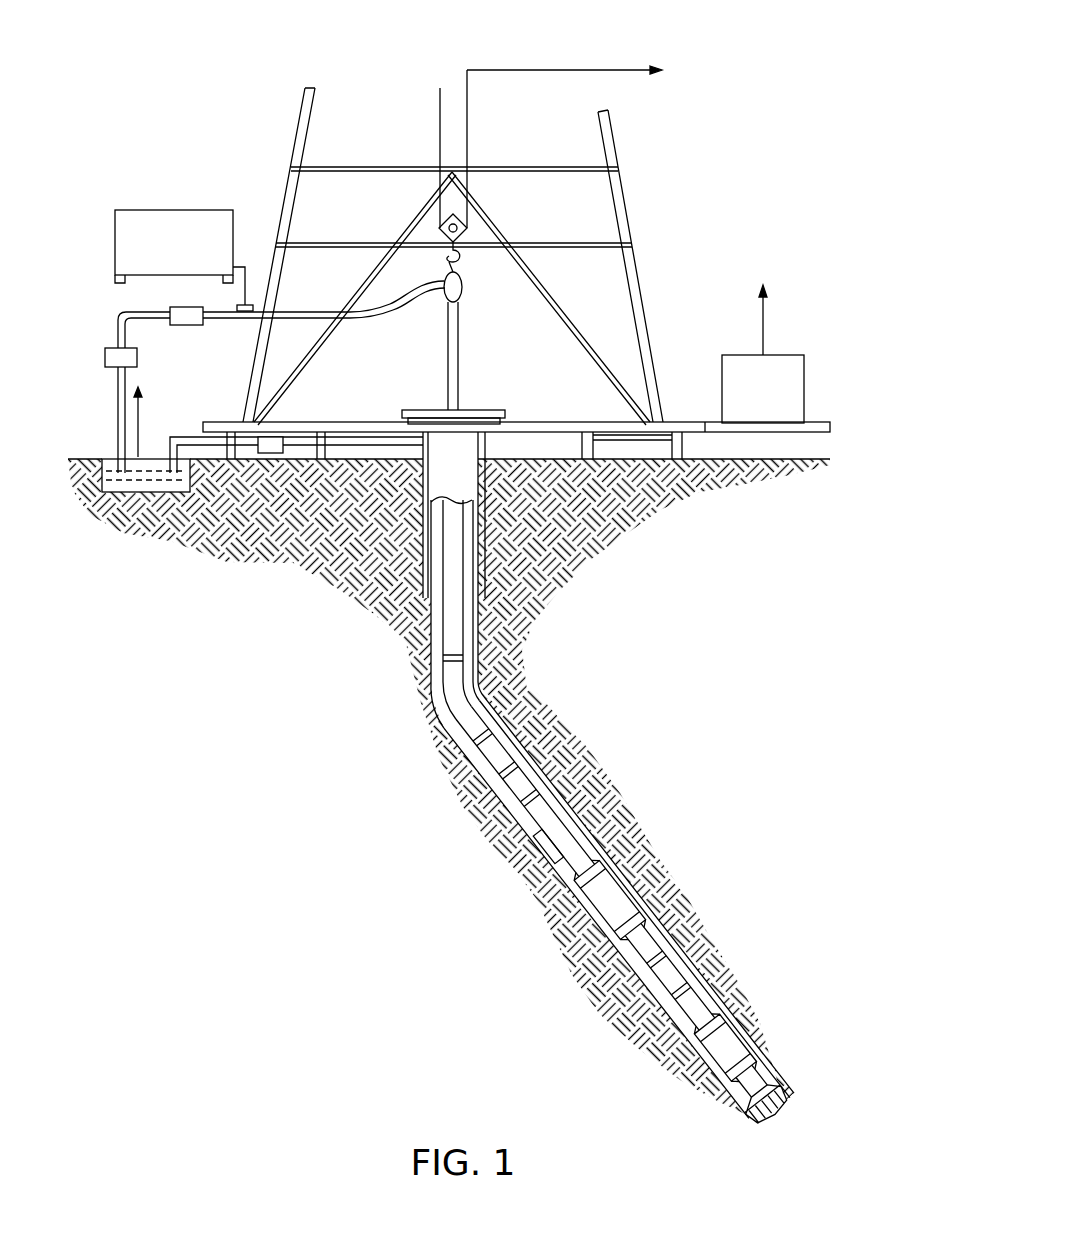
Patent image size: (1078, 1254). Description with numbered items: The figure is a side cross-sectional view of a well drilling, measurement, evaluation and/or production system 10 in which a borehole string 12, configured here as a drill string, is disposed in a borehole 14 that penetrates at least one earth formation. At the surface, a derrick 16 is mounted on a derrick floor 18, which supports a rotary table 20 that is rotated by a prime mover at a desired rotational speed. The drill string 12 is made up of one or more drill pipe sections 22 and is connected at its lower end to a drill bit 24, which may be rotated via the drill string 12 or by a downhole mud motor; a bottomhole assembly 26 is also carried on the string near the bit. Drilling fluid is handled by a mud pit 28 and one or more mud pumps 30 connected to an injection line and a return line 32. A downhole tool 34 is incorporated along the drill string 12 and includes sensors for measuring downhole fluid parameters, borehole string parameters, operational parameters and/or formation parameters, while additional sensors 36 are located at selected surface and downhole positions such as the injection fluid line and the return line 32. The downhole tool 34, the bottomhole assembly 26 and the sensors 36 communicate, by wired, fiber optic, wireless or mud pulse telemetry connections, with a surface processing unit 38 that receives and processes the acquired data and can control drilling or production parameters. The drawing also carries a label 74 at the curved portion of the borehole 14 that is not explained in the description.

The well drilling, measurement, evaluation and/or production system 10 is at (178, 86).
The borehole string 12 is at (480, 752).
The borehole 14 is at (486, 696).
The derrick 16 is at (632, 237).
The derrick floor 18 is at (677, 420).
The rotary table 20 is at (433, 408).
The drill pipe sections 22 is at (441, 634).
The drill bit 24 is at (788, 1076).
The bottomhole assembly (BHA) 26 is at (670, 1010).
The mud pit 28 is at (148, 488).
The mud pumps 30 is at (113, 352).
The return line 32 is at (360, 447).
The downhole tool 34 is at (640, 937).
The sensors 36 is at (187, 325).
The surface processing unit 38 is at (148, 210).
The curved wellbore section 74 is at (445, 696).